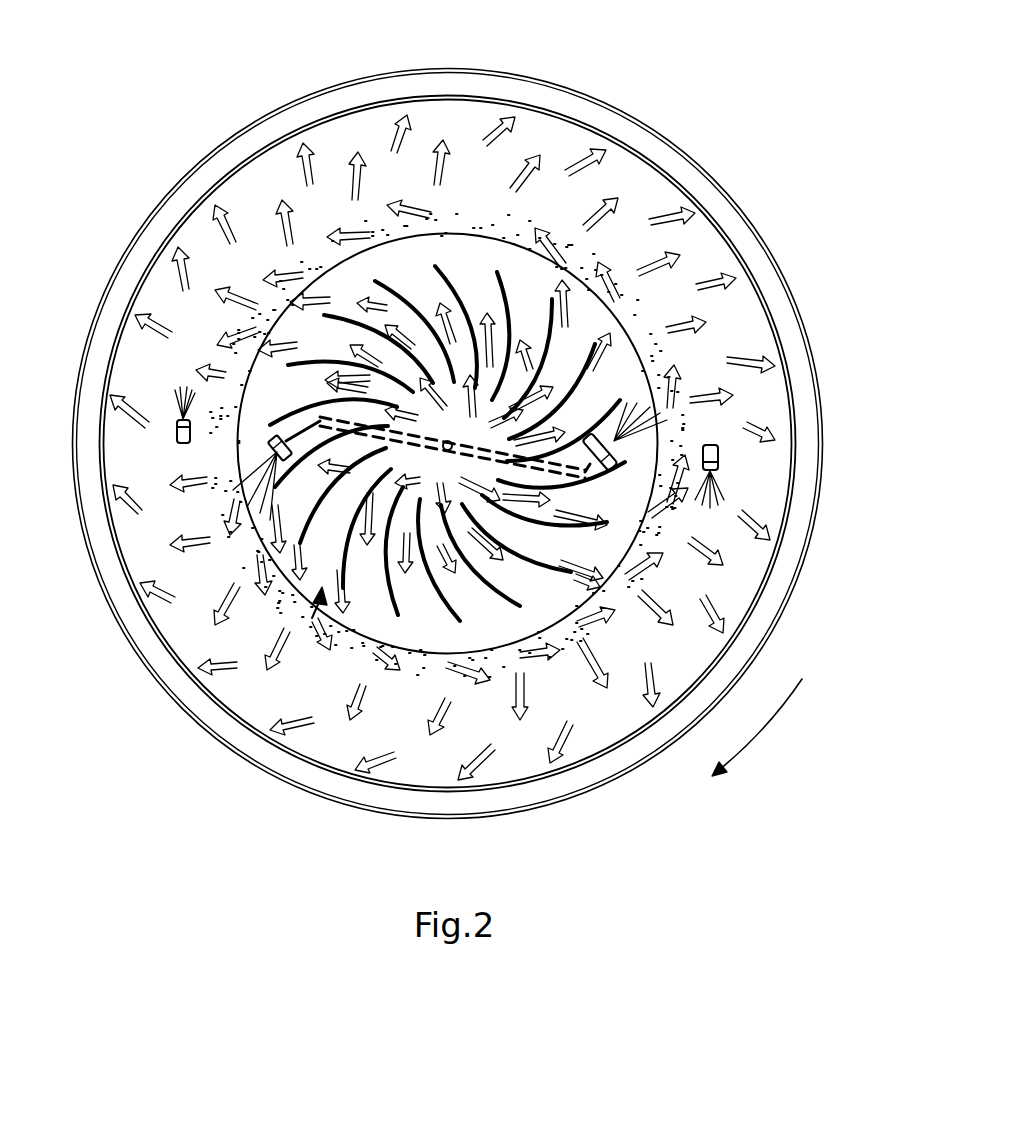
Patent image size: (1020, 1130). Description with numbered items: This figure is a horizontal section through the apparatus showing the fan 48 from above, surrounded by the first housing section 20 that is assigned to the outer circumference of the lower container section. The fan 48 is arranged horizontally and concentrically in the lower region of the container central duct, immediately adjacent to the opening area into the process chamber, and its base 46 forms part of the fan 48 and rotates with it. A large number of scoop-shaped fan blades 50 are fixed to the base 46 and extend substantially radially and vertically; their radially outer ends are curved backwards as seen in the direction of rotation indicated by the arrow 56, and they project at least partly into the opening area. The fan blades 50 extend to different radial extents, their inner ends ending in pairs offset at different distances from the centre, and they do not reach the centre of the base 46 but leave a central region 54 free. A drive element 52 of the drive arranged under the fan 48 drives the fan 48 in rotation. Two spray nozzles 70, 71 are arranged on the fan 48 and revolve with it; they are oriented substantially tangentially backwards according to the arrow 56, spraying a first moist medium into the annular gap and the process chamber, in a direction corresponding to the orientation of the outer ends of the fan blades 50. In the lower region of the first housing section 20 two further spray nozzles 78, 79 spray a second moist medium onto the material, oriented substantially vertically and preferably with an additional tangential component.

The first housing section 20 is at (182, 622).
The base 46 is at (557, 598).
The fan 48 is at (322, 598).
The fan blades 50 is at (423, 590).
The drive element 52 is at (487, 405).
The central region 54 is at (494, 406).
The arrow 56 is at (775, 733).
The first spray nozzle 70 is at (280, 452).
The spray nozzle 71 is at (607, 465).
The spray nozzle 78 is at (718, 450).
The spray nozzle 79 is at (176, 431).